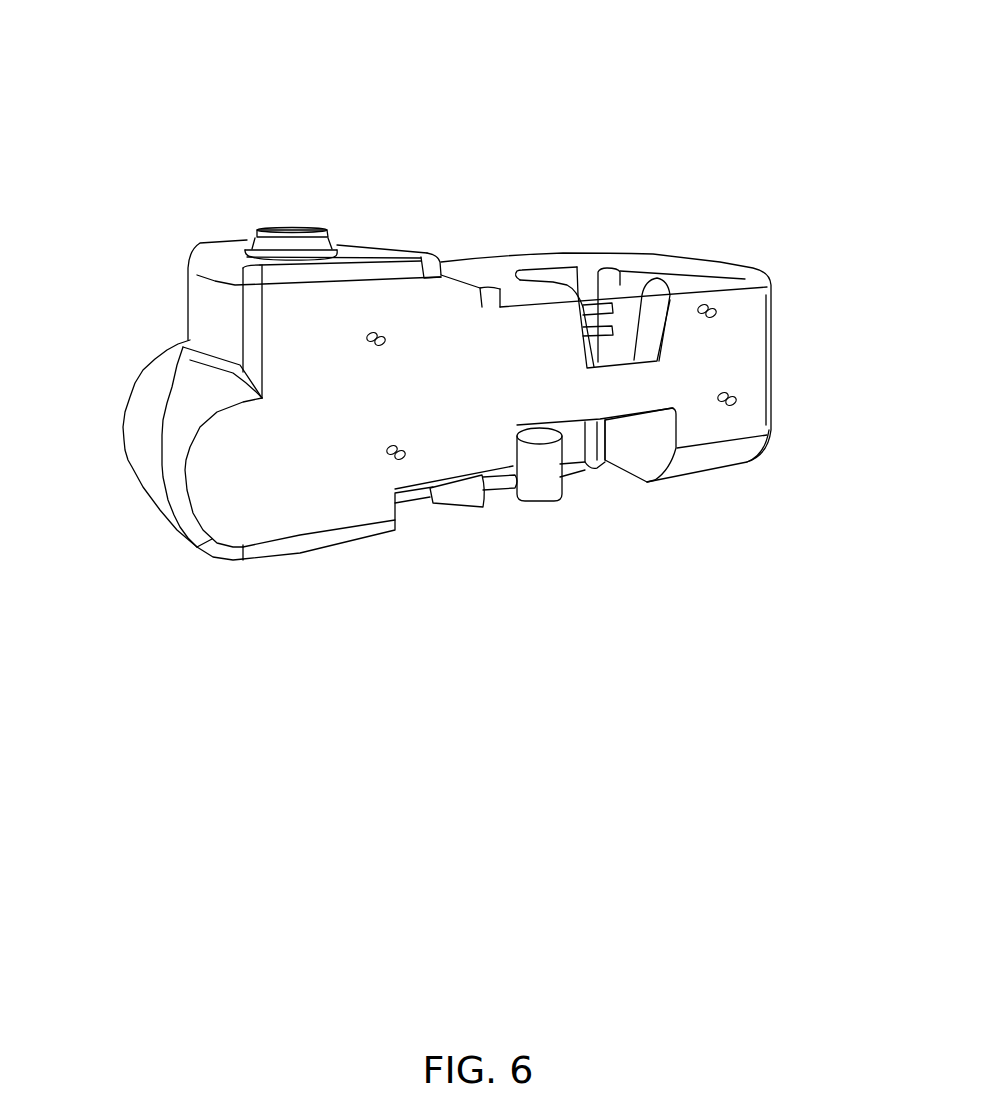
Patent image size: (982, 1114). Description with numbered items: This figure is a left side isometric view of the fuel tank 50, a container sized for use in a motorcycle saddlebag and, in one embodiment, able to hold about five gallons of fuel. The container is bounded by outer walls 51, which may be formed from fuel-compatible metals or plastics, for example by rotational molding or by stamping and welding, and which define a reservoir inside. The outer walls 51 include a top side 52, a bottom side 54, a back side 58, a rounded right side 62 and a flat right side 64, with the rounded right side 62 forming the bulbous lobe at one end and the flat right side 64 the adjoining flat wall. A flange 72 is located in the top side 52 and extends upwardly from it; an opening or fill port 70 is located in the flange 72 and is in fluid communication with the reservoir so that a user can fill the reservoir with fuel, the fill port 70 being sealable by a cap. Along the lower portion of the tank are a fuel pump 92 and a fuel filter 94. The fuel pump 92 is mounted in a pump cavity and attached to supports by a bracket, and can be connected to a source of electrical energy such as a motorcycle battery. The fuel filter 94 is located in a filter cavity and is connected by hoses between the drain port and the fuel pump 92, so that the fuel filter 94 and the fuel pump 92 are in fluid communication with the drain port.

The fuel tank 50 is at (256, 67).
The outer walls 51 is at (773, 368).
The top side 52 is at (495, 275).
The bottom side 54 is at (348, 540).
The back side 58 is at (712, 418).
The rounded right side 62 is at (153, 408).
The flat right side 64 is at (203, 308).
The fill port 70 is at (290, 230).
The flange 72 is at (257, 240).
The fuel pump 92 is at (543, 503).
The fuel filter 94 is at (460, 503).